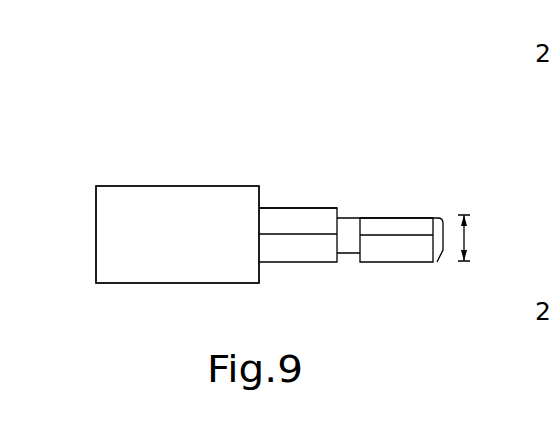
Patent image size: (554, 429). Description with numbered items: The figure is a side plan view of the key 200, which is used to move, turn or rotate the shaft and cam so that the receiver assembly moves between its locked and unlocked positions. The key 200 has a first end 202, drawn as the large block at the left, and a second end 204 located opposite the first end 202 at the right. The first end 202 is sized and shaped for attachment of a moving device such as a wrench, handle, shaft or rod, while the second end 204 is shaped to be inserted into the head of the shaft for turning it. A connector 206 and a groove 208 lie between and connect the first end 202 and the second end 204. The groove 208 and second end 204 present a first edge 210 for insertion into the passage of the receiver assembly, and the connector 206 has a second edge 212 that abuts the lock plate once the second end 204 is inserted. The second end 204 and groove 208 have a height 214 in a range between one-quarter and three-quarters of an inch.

The key 200 is at (140, 317).
The first end 202 is at (132, 202).
The second end 204 is at (409, 225).
The connector 206 is at (290, 217).
The groove 208 is at (349, 254).
The first edge 210 is at (385, 216).
The second edge 212 is at (332, 207).
The height 214 is at (491, 238).